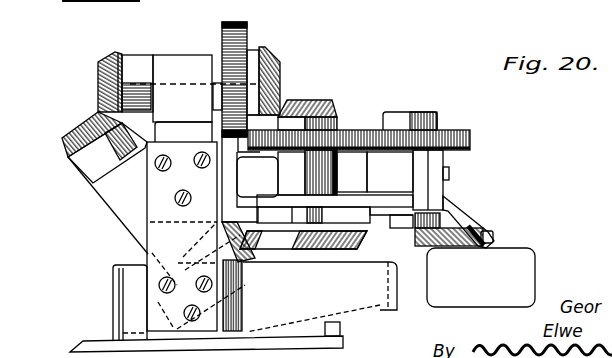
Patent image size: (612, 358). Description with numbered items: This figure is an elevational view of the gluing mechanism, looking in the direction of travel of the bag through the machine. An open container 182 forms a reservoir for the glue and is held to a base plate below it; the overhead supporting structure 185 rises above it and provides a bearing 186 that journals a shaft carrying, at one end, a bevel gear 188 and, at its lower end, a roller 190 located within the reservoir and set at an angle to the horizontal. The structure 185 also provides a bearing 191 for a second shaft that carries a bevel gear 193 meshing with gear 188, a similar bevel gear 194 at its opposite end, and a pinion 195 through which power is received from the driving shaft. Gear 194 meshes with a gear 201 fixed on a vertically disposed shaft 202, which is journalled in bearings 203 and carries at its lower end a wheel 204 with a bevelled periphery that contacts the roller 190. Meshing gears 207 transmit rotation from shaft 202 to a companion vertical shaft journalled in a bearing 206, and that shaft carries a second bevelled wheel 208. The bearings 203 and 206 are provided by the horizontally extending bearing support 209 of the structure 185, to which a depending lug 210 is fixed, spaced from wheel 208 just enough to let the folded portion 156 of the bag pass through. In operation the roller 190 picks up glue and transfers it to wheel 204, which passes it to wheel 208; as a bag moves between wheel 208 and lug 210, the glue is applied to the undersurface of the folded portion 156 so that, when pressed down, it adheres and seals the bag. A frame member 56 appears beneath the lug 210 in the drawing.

The frame member 56 is at (525, 273).
The folded portion 156 is at (491, 232).
The open container 182 is at (113, 295).
The overhead supporting structure 185 is at (166, 187).
The bearing 186 is at (103, 192).
The bevel gear 188 is at (87, 118).
The roller 190 is at (243, 267).
The bearing 191 is at (170, 56).
The bevel gear 193 is at (106, 56).
The bevel gear 194 is at (278, 60).
The pinion 195 is at (232, 22).
The gear 201 is at (313, 100).
The vertically disposed shaft 202 is at (327, 233).
The bearings 203 is at (283, 187).
The wheel 204 is at (302, 233).
The bearing 206 is at (400, 160).
The meshing gears 207 is at (380, 127).
The wheel 208 is at (417, 246).
The bearing support 209 is at (397, 200).
The depending lug 210 is at (473, 211).